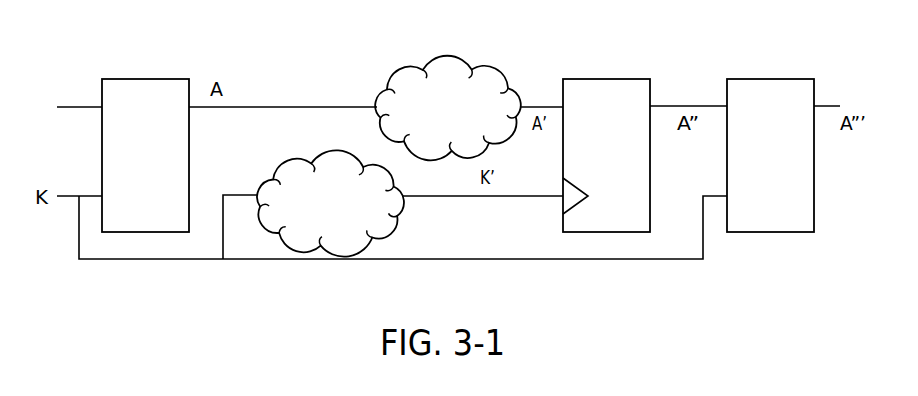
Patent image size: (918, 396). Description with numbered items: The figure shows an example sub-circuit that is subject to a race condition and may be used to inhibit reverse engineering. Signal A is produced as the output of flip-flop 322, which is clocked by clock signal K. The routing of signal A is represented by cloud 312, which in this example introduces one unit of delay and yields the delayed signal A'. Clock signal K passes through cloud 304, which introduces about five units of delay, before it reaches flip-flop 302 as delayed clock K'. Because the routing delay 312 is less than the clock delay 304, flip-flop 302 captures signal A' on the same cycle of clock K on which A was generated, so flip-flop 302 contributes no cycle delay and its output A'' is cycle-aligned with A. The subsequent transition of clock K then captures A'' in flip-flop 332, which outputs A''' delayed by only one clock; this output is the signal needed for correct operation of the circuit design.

The flip-flop 322 is at (145, 155).
The flip-flop 302 is at (606, 155).
The flip-flop 332 is at (770, 155).
The routing delay 312 is at (493, 70).
The clock delay 304 is at (328, 165).